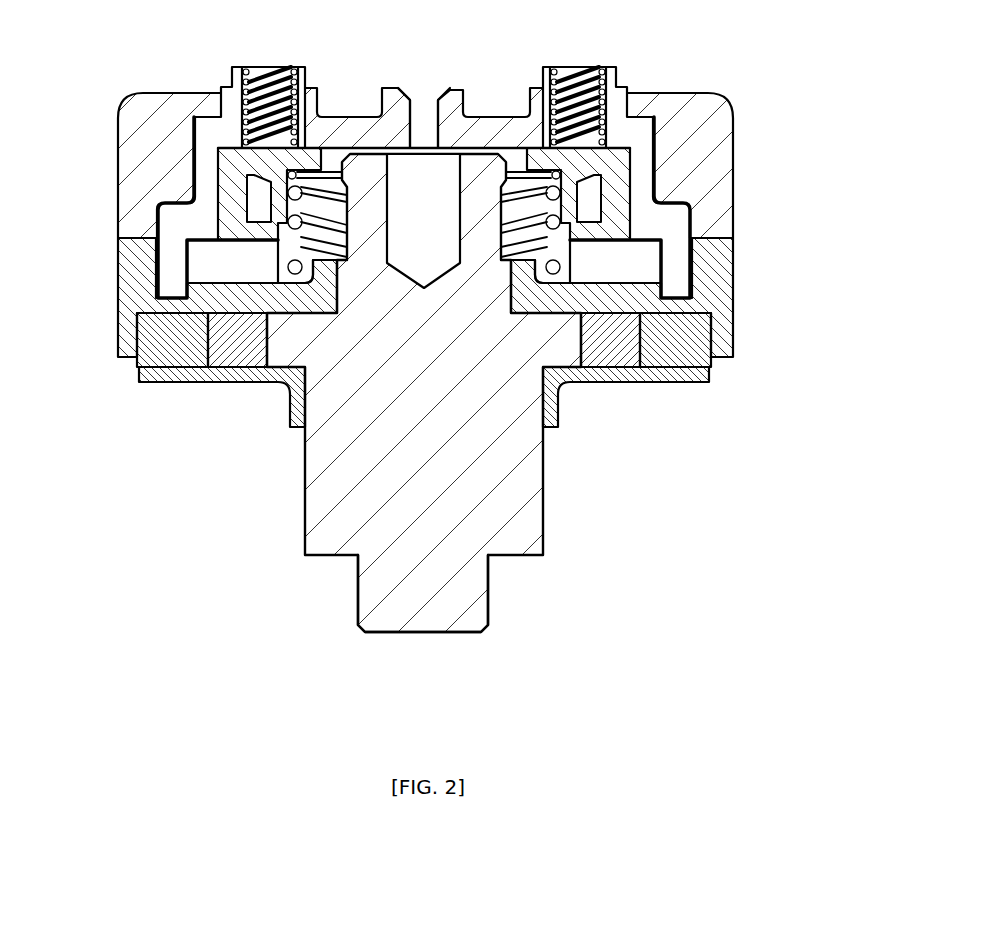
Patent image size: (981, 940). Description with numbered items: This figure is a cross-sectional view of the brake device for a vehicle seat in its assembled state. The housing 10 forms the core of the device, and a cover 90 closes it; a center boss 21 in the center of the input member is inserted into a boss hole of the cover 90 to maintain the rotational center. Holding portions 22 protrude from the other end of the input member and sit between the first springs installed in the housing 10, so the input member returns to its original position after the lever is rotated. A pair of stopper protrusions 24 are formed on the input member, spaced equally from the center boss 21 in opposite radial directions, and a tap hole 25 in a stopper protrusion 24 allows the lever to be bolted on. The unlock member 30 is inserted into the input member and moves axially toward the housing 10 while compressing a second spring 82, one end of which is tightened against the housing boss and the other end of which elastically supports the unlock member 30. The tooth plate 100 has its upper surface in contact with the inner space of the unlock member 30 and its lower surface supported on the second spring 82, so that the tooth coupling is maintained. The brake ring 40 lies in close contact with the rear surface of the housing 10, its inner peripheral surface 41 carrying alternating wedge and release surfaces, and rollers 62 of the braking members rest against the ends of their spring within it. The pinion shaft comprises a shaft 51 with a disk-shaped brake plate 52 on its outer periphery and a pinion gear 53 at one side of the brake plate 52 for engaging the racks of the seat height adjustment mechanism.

The housing 10 is at (137, 280).
The center boss 21 is at (390, 110).
The holding portions 22 is at (677, 278).
The stopper protrusions 24 is at (622, 100).
The tap hole 25 is at (572, 97).
The unlock member 30 is at (700, 170).
The brake ring 40 is at (152, 340).
The inner peripheral surface 41 is at (190, 370).
The shaft 51 is at (477, 190).
The brake plate 52 is at (575, 347).
The pinion gear 53 is at (545, 513).
The rollers 62 is at (240, 370).
The second spring 82 is at (692, 238).
The cover 90 is at (143, 152).
The tooth plate 100 is at (330, 170).